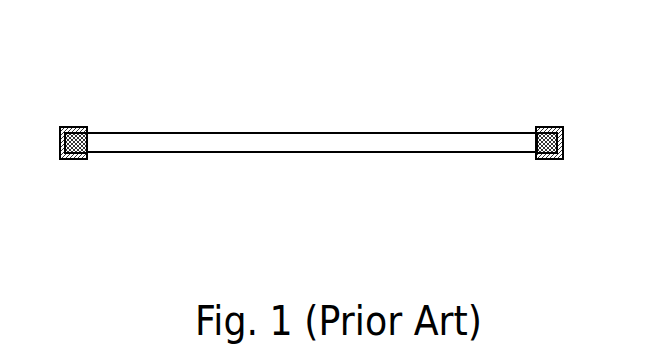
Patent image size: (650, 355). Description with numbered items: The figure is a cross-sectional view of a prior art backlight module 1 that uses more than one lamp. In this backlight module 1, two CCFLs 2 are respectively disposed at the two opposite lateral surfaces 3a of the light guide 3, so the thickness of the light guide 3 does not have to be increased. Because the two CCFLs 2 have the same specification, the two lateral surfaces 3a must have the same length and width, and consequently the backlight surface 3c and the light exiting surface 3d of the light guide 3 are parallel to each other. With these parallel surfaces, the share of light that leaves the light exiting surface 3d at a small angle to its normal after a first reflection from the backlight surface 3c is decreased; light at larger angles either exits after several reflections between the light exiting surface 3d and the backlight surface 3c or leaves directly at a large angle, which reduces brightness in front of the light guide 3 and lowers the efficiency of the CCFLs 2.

The backlight module 1 is at (194, 61).
The CCFL 2 is at (71, 139).
The light guide 3 is at (383, 133).
The lateral surface 3a is at (83, 154).
The backlight surface 3c is at (311, 154).
The light exiting surface 3d is at (311, 131).